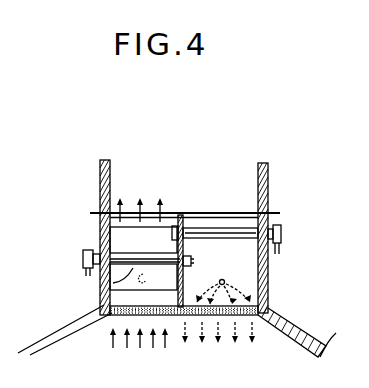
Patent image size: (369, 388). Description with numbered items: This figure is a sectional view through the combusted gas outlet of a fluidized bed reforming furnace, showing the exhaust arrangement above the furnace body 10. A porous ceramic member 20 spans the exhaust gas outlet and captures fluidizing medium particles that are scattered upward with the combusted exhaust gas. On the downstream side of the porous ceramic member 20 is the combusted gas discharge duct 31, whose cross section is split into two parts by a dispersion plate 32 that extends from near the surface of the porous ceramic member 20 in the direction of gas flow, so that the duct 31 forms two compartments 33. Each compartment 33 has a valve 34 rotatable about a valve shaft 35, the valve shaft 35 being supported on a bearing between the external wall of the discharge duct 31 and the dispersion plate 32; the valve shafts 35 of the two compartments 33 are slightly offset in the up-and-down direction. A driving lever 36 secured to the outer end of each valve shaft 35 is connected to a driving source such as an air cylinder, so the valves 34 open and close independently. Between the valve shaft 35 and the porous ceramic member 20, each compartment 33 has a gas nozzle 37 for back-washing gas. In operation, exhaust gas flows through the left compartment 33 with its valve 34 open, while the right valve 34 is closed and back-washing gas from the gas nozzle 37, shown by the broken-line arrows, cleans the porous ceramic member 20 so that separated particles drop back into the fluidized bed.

The reforming furnace body 10 is at (340, 334).
The porous ceramic member 20 is at (180, 317).
The combusted gas discharge duct 31 is at (269, 300).
The dispersion plate 32 is at (189, 249).
The compartment 33 is at (107, 283).
The valve 34 is at (233, 229).
The valve shaft 35 is at (120, 252).
The driving lever 36 is at (83, 258).
The gas nozzle 37 is at (235, 274).